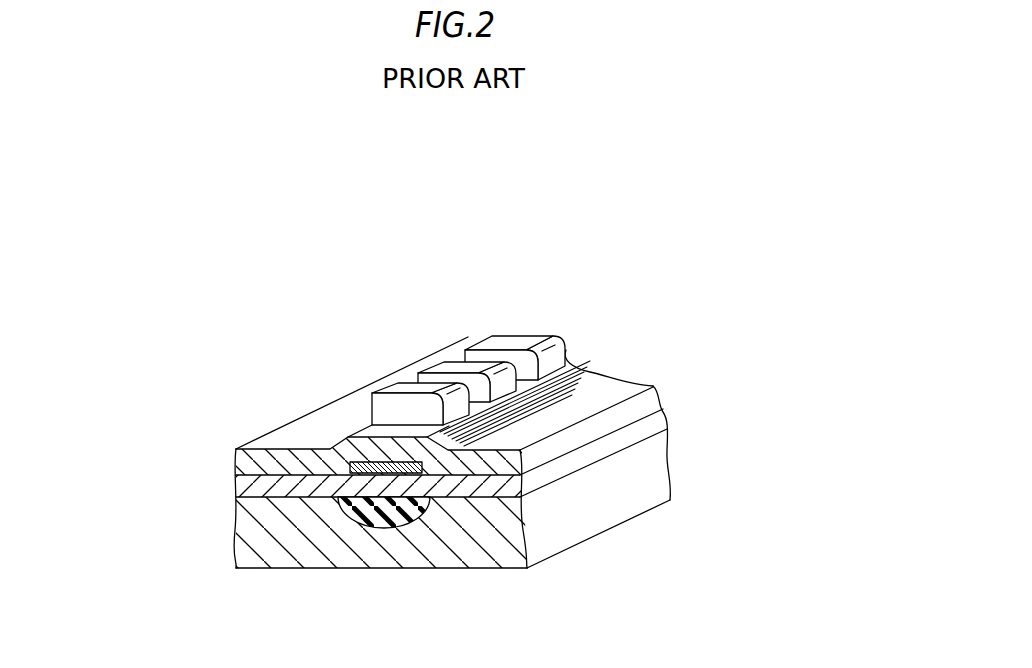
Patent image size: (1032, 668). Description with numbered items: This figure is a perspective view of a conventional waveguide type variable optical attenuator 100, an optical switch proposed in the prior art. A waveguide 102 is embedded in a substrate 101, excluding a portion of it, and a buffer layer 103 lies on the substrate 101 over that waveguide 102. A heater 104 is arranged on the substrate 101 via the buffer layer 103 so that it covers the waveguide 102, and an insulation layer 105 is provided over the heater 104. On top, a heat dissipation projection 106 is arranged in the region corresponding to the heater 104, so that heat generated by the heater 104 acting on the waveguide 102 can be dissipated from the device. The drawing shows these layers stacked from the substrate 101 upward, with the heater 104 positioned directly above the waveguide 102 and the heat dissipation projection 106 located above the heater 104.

The waveguide type variable optical attenuator 100 is at (586, 335).
The substrate 101 is at (512, 537).
The waveguide 102 is at (367, 513).
The buffer layer 103 is at (512, 491).
The heater 104 is at (398, 473).
The insulation layer 105 is at (248, 462).
The heat dissipation projection 106 is at (388, 407).